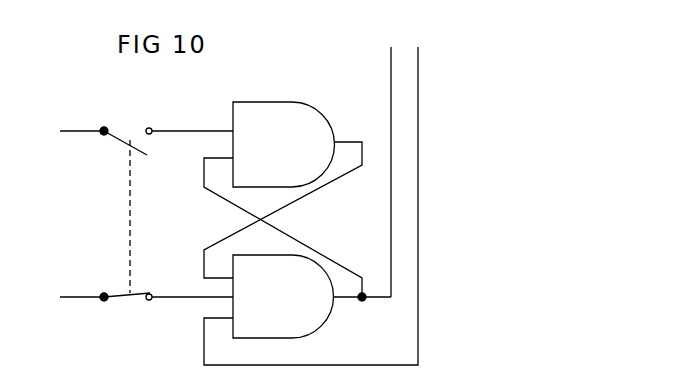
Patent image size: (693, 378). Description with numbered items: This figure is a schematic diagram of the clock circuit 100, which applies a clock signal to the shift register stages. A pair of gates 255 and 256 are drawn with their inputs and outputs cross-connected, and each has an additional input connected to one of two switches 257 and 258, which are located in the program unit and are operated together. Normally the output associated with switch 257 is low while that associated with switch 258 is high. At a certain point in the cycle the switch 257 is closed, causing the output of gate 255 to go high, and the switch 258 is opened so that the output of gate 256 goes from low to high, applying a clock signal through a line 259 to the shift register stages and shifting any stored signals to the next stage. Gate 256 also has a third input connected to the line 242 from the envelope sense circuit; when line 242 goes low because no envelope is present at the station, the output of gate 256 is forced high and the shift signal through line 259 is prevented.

The clock circuit 100 is at (587, 117).
The line from the envelope sense circuit 242 is at (418, 256).
The gate 255 is at (313, 113).
The gate 256 is at (320, 311).
The switch 257 is at (120, 141).
The switch 258 is at (119, 300).
The line 259 is at (391, 282).